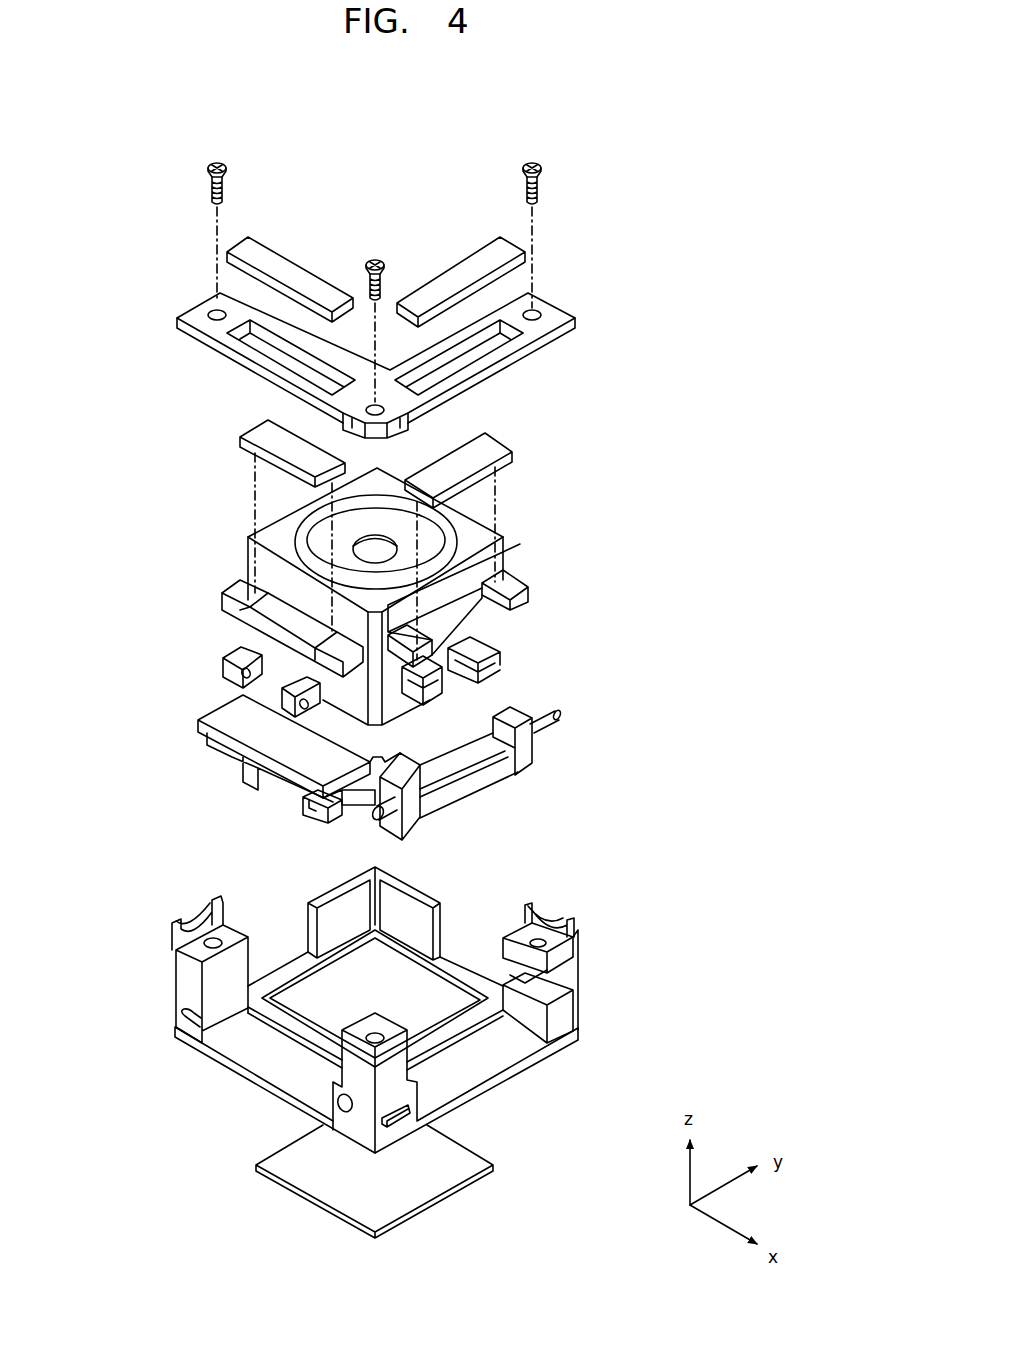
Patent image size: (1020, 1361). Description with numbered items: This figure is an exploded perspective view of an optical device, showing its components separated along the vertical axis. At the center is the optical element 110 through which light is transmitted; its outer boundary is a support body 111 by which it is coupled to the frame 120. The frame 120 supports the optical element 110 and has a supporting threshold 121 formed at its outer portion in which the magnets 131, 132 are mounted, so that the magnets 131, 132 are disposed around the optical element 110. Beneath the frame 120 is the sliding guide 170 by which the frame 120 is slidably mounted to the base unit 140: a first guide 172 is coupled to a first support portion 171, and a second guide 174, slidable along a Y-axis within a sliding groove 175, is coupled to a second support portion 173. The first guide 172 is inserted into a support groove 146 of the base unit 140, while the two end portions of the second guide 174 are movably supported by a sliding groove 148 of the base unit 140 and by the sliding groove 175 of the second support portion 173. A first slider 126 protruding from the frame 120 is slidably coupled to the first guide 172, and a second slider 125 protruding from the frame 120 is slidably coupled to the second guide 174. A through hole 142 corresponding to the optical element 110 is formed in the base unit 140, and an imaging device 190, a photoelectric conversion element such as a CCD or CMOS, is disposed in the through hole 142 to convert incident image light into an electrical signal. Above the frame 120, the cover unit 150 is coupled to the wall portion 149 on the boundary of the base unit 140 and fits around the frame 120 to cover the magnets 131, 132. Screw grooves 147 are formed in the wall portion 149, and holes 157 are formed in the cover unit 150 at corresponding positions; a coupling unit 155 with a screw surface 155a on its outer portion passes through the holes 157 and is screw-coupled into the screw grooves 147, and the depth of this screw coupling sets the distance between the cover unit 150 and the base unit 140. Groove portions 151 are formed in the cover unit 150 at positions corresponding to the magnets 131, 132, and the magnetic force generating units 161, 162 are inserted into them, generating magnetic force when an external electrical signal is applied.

The optical element 110 is at (368, 552).
The support body 111 is at (423, 560).
The frame 120 is at (387, 596).
The supporting threshold 121 is at (225, 598).
The second slider 125 is at (287, 705).
The first slider 126 is at (482, 660).
The magnet 131 is at (245, 440).
The magnet 132 is at (493, 443).
The base unit 140 is at (399, 1003).
The through hole 142 is at (407, 973).
The support groove 146 is at (553, 993).
The screw groove 147 is at (210, 940).
The sliding groove 148 is at (190, 1022).
The wall portion 149 is at (163, 964).
The cover unit 150 is at (406, 342).
The groove portion 151 is at (267, 350).
The coupling unit 155 is at (542, 167).
The screw surface 155a is at (538, 189).
The hole 157 is at (213, 314).
The magnetic force generating unit 161 is at (277, 258).
The magnetic force generating unit 162 is at (462, 265).
The sliding guide 170 is at (401, 773).
The first support portion 171 is at (457, 788).
The first guide 172 is at (550, 716).
The second support portion 173 is at (293, 765).
The second guide 174 is at (213, 752).
The sliding groove 175 is at (303, 814).
The imaging device 190 is at (476, 1185).